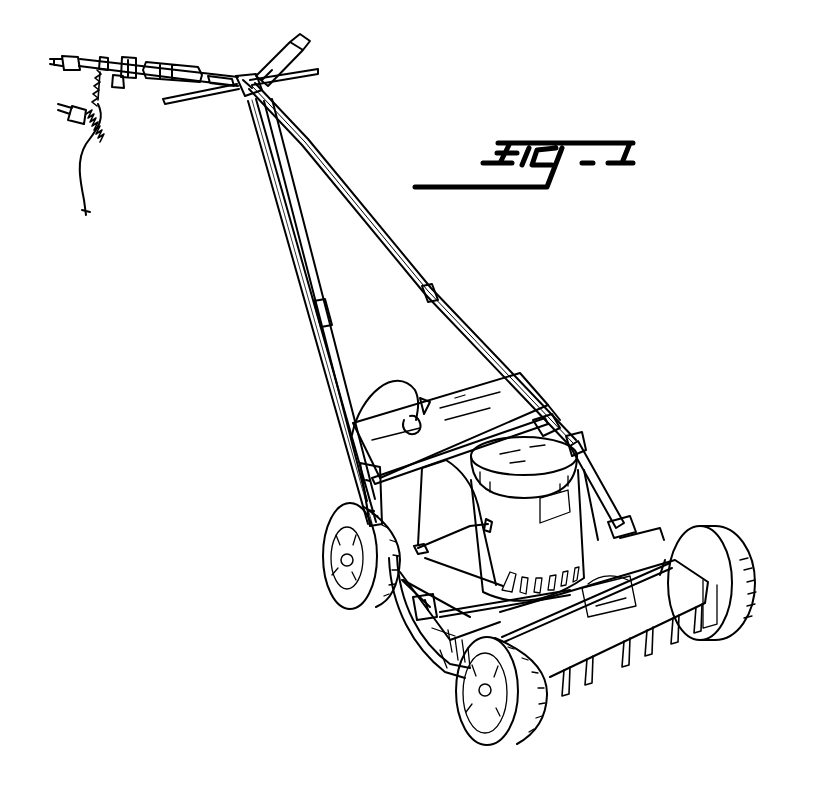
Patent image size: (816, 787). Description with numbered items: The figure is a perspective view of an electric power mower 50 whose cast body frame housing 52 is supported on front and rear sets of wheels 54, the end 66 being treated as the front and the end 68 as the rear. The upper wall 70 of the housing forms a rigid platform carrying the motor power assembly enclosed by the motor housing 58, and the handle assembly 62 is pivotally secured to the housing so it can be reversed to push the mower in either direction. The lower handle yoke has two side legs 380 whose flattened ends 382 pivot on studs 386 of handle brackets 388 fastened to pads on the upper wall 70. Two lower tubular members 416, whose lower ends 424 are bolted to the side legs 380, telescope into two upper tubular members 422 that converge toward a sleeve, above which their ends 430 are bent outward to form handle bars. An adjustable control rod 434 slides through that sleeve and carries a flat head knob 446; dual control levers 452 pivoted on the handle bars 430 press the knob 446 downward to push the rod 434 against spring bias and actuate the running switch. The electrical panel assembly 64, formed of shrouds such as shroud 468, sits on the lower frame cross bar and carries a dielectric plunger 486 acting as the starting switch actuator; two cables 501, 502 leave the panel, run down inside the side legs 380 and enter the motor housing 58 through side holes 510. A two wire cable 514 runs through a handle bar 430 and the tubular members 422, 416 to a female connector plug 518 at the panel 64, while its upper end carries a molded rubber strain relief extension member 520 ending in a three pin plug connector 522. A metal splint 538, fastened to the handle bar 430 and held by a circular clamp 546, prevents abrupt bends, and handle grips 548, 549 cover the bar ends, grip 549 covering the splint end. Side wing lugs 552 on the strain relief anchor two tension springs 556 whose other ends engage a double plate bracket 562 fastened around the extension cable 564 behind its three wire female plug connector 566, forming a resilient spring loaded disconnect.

The power mower 50 is at (550, 389).
The body frame casting 52 is at (425, 645).
The wheels 54 is at (334, 574).
The motor housing 58 is at (606, 496).
The handle assembly 62 is at (312, 365).
The electric component panel assembly 64 is at (474, 392).
The front end 66 is at (634, 664).
The rear end 68 is at (418, 502).
The upper wall 70 is at (619, 568).
The side legs 380 is at (582, 478).
The ends of legs 382 is at (618, 510).
The studs 386 is at (628, 528).
The handle brackets 388 is at (640, 538).
The lower tubular members 416 is at (500, 358).
The upper tubular members 422 is at (329, 187).
The lower ends of lower tubular members 424 is at (356, 489).
The handle bars 430 is at (222, 78).
The adjustable rod 434 is at (322, 302).
The flat head knob 446 is at (246, 96).
The control levers 452 is at (210, 92).
The shroud 468 is at (360, 450).
The dielectric plunger 486 is at (422, 392).
The cable 501 is at (548, 424).
The cable 502 is at (424, 550).
The side holes 510 is at (478, 526).
The two wire electric cable 514 is at (374, 382).
The female connector plug 518 is at (418, 428).
The strain relief extension member 520 is at (100, 96).
The three pin plug connector 522 is at (74, 56).
The metal splint 538 is at (132, 66).
The circular clamp 546 is at (120, 86).
The handle grip 548 is at (286, 50).
The handle grip 549 is at (190, 70).
The side wing lugs 552 is at (106, 60).
The tension springs 556 is at (88, 92).
The double plate bracket 562 is at (100, 124).
The extension cable 564 is at (86, 178).
The three wire female plug connector 566 is at (68, 118).